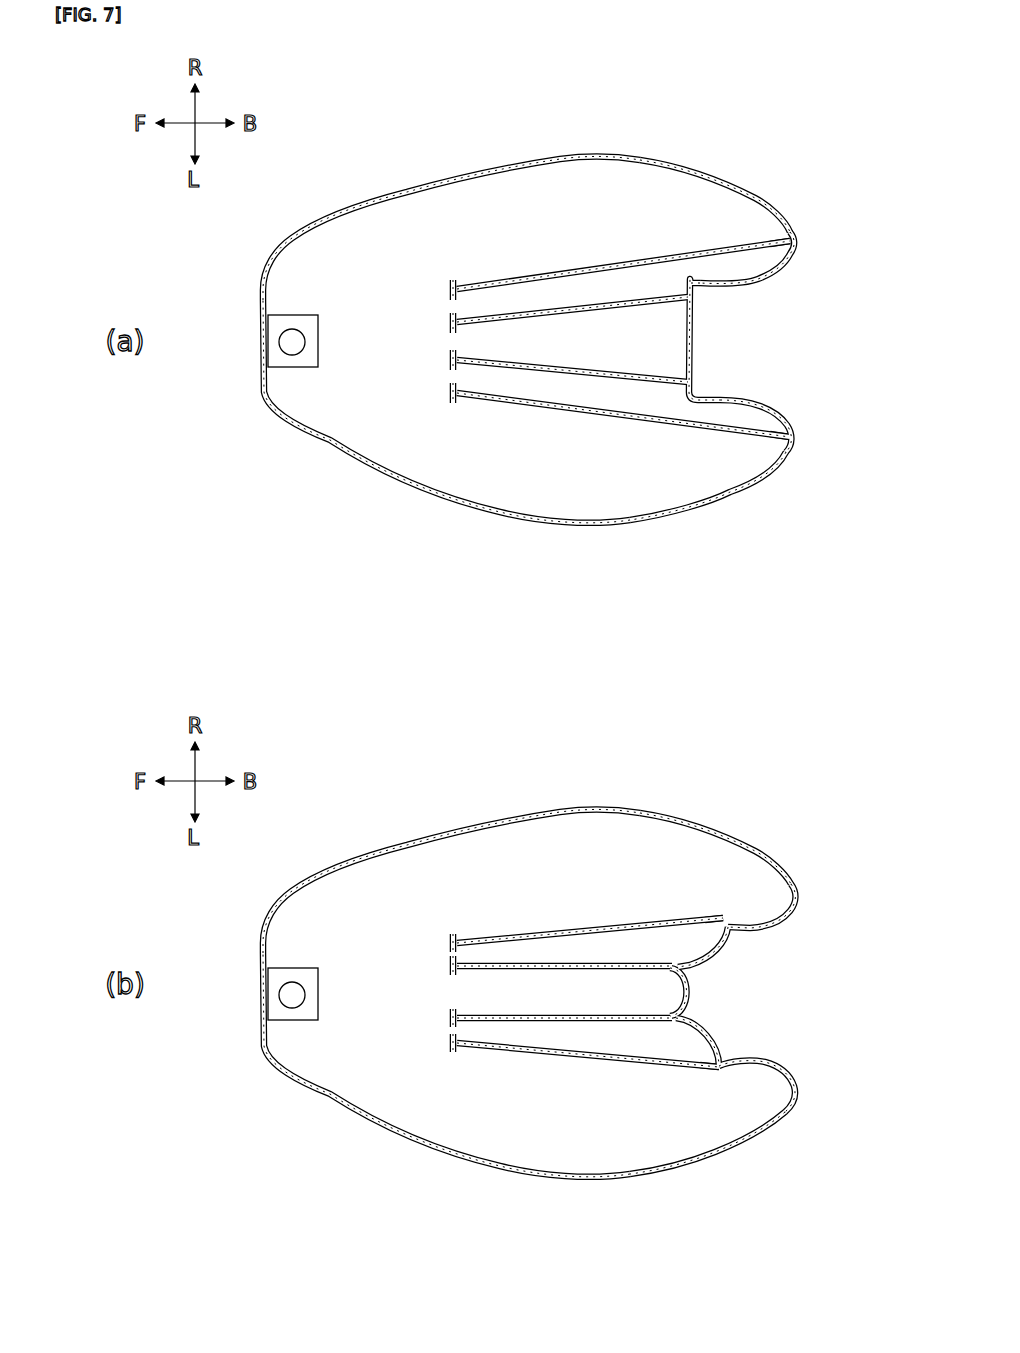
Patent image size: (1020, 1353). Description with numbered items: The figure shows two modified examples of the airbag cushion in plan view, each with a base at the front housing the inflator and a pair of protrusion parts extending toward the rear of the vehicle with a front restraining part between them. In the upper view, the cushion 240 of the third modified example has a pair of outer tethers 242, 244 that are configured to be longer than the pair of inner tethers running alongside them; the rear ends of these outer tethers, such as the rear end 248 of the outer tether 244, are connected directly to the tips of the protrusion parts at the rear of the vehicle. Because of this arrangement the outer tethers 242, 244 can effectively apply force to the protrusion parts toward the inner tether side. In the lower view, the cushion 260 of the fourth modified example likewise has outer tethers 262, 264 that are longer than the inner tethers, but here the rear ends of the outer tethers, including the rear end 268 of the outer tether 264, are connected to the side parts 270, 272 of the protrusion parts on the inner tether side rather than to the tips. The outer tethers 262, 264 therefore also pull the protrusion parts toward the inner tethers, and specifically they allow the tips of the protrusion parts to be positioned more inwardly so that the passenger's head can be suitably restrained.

The cushion of Modified Example 3 240 is at (388, 203).
The outer tether 242 is at (572, 413).
The outer tether 244 is at (586, 268).
The rear end of the outer tether 248 is at (784, 238).
The cushion of Modified Example 4 260 is at (388, 856).
The outer tether 262 is at (542, 1053).
The outer tether 264 is at (592, 930).
The rear end of the outer tether 268 is at (727, 913).
The side part of the protrusion part 270 is at (727, 1056).
The side part of the protrusion part 272 is at (730, 930).